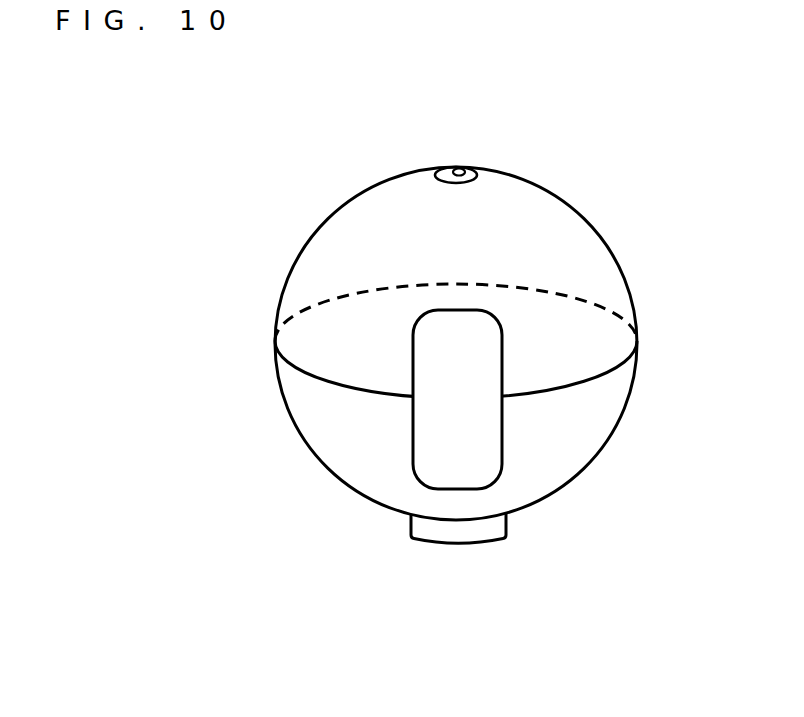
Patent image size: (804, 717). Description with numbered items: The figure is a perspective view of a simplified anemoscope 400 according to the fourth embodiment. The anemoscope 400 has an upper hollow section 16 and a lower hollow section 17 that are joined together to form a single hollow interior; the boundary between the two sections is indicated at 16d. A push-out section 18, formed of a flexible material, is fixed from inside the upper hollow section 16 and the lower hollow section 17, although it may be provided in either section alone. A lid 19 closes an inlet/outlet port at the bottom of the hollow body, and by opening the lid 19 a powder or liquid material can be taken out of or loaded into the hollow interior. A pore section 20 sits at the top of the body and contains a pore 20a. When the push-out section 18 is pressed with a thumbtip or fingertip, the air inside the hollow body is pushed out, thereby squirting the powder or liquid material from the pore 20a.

The upper hollow section 16 is at (583, 255).
The parting line of upper casing 16d is at (585, 364).
The lower hollow section 17 is at (592, 413).
The push-out section 18 is at (427, 363).
The lid 19 is at (421, 533).
The pore section 20 is at (472, 168).
The pore 20a is at (451, 168).
The simplified anemoscope 400 is at (484, 624).